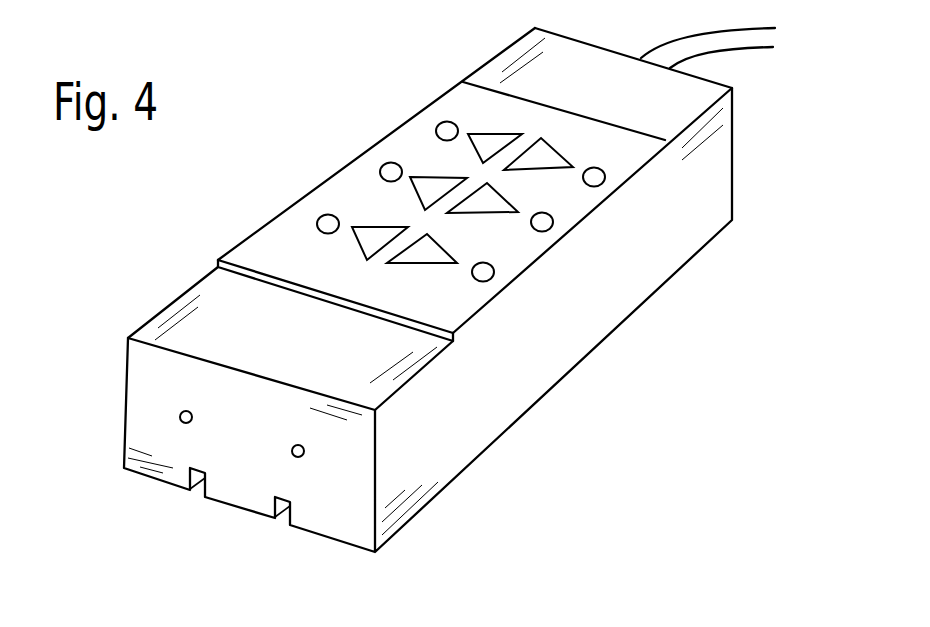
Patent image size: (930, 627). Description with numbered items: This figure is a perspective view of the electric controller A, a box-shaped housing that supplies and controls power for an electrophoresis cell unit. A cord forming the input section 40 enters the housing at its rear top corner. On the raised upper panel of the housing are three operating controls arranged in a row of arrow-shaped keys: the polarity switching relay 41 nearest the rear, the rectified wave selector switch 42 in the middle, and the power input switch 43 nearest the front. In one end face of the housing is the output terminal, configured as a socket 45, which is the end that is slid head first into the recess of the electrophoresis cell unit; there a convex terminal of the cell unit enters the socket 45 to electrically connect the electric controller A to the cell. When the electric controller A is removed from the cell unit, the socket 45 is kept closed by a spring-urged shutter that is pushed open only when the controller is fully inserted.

The input section 40 is at (743, 52).
The polarity switching relay 41 is at (488, 134).
The rectified wave selector switch 42 is at (438, 178).
The power input switch 43 is at (363, 237).
The socket 45 is at (178, 417).
The electric controller A is at (590, 350).